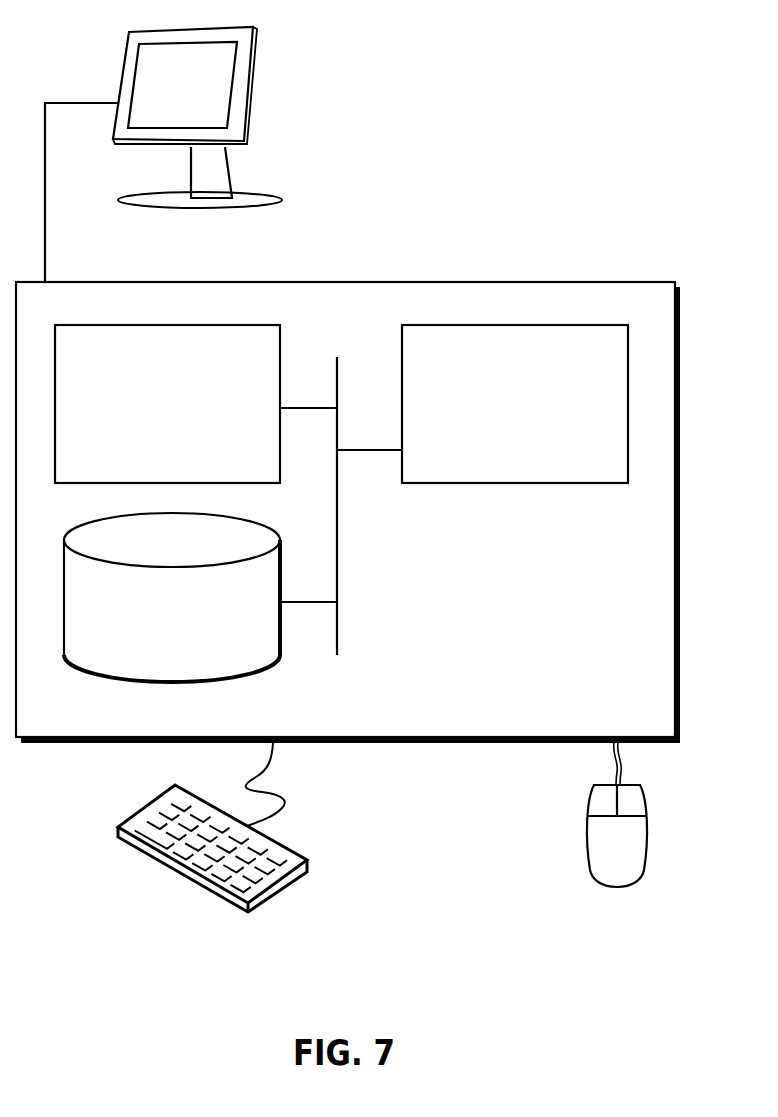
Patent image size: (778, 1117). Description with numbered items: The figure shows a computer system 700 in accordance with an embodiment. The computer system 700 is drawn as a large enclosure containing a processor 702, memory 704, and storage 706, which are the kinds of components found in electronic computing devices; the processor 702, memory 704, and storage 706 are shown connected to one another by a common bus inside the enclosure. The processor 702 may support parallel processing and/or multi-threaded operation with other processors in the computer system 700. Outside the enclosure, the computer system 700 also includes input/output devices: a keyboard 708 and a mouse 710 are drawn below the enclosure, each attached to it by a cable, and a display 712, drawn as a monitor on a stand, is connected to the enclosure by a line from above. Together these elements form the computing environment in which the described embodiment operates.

The computer system 700 is at (390, 260).
The processor 702 is at (540, 416).
The memory 704 is at (190, 416).
The storage 706 is at (196, 628).
The keyboard 708 is at (137, 848).
The mouse 710 is at (595, 858).
The display 712 is at (163, 154).